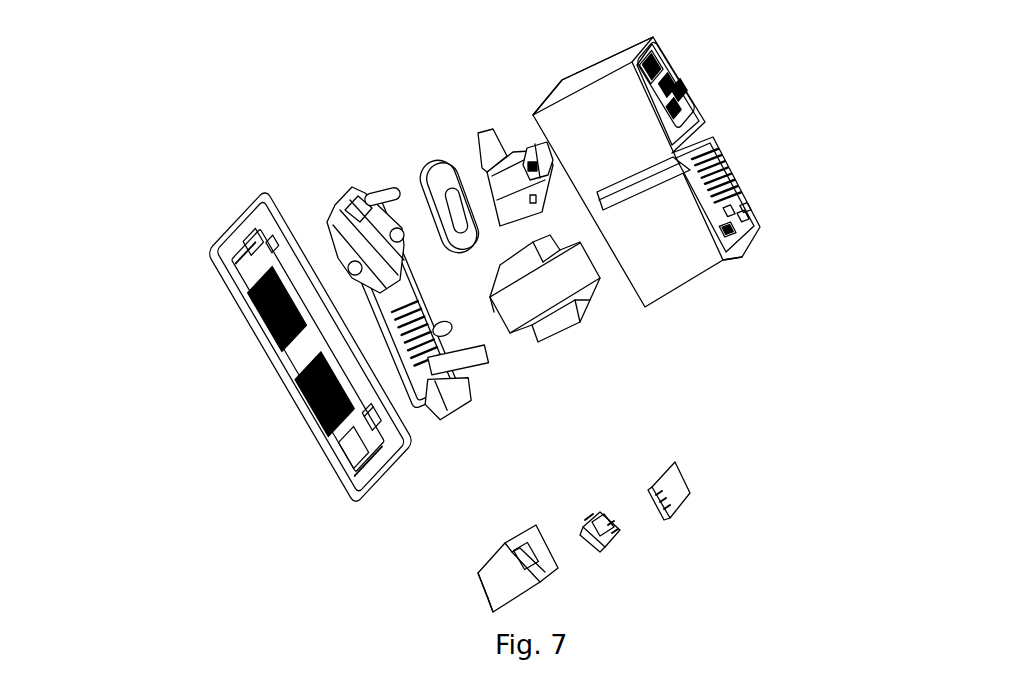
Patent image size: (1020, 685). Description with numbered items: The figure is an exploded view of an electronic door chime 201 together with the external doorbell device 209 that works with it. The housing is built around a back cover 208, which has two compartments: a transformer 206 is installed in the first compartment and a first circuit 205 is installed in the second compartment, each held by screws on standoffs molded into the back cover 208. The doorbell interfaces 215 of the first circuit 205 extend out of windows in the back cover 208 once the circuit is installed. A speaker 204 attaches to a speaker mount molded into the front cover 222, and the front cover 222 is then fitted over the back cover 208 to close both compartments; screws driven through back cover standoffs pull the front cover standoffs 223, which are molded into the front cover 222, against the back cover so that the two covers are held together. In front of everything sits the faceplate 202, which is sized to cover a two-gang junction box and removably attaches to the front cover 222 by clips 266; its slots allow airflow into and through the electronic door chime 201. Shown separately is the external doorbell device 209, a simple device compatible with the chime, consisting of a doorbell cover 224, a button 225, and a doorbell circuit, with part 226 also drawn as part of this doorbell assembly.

The electronic door chime 201 is at (190, 132).
The faceplate 202 is at (280, 390).
The speaker 204 is at (428, 162).
The first circuit 205 is at (485, 148).
The transformer 206 is at (564, 318).
The back cover 208 is at (730, 188).
The external doorbell device 209 is at (757, 463).
The doorbell interfaces 215 is at (518, 155).
The front cover 222 is at (342, 196).
The front cover standoffs 223 is at (478, 357).
The doorbell cover 224 is at (543, 573).
The button 225 is at (602, 538).
The plate 226 is at (677, 485).
The clips 266 is at (367, 417).